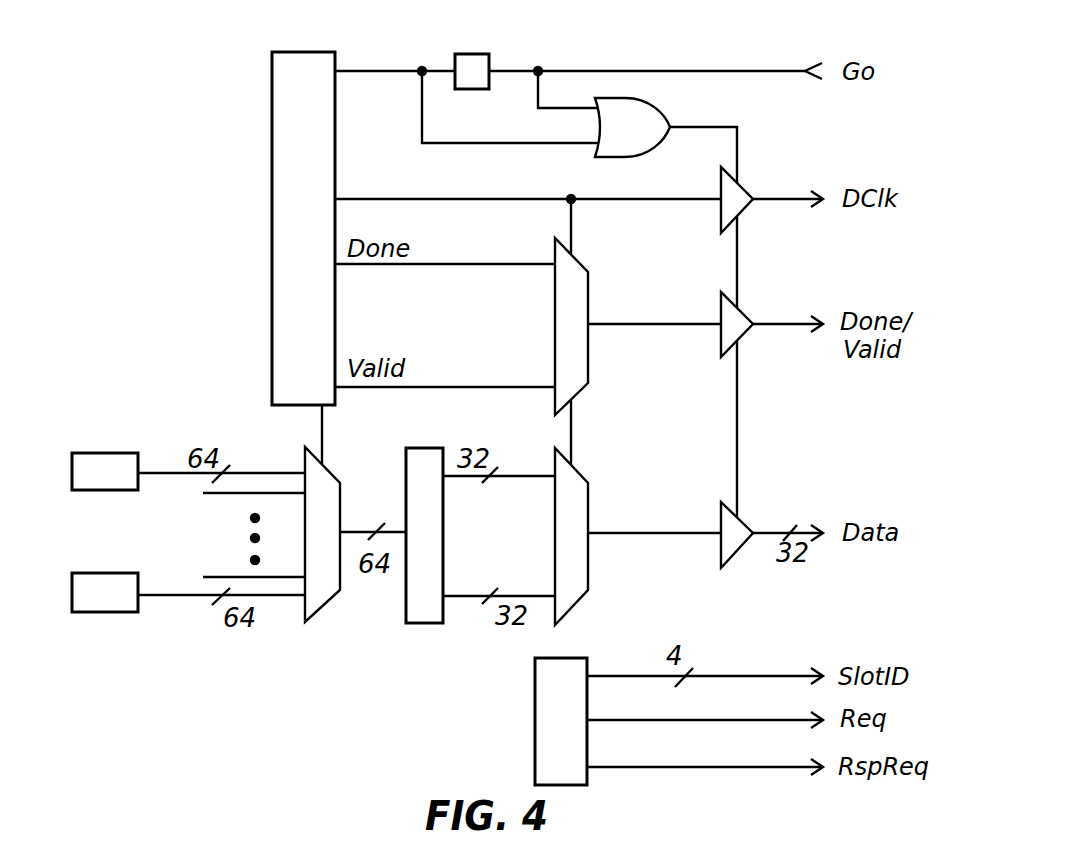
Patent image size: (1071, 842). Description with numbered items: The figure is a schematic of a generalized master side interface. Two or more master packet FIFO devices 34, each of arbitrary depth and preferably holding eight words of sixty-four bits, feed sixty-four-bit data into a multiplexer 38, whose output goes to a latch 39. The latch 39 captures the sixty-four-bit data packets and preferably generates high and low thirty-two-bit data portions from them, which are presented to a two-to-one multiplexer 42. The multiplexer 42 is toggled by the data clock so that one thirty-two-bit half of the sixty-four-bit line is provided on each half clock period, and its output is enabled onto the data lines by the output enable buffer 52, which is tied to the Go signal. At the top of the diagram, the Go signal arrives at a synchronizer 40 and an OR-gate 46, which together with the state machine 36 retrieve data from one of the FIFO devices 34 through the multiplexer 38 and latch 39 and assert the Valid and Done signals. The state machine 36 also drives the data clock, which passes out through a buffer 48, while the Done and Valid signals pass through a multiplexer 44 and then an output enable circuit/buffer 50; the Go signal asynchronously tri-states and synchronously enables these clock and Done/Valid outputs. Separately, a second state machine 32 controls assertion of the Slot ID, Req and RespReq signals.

The state machine 32 is at (535, 702).
The master packet FIFO device 34 is at (86, 453).
The state machine 36 is at (272, 170).
The multiplexer 38 is at (328, 608).
The latch 39 is at (443, 498).
The synchronizer 40 is at (489, 62).
The multiplexer 42 is at (578, 600).
The multiplexer 44 is at (578, 392).
The OR-gate 46 is at (672, 113).
The buffer 48 is at (718, 210).
The output enable circuit/buffer 50 is at (740, 336).
The output enable/buffer 52 is at (745, 518).